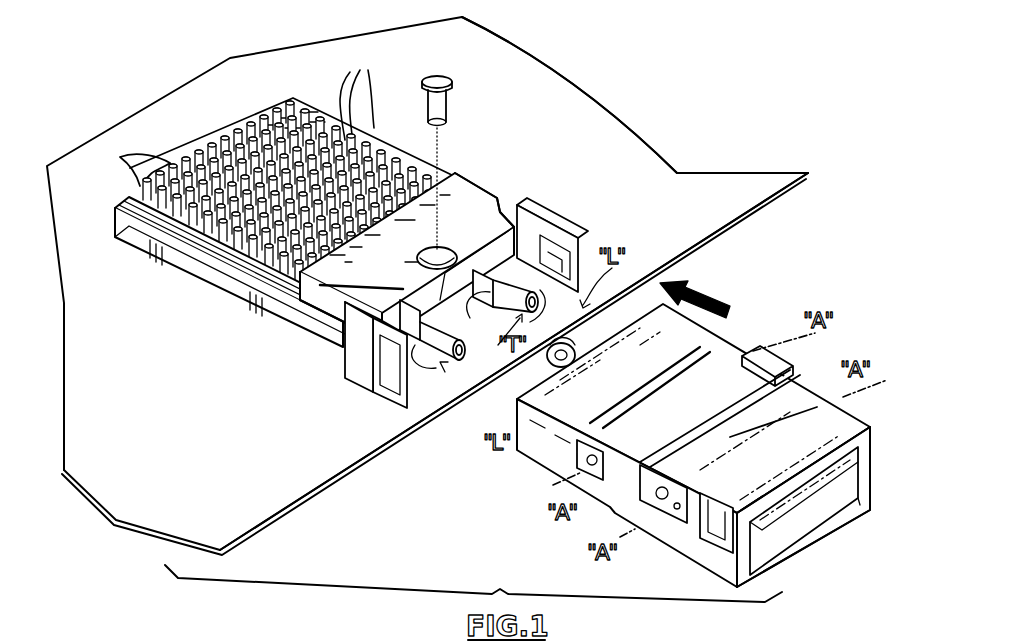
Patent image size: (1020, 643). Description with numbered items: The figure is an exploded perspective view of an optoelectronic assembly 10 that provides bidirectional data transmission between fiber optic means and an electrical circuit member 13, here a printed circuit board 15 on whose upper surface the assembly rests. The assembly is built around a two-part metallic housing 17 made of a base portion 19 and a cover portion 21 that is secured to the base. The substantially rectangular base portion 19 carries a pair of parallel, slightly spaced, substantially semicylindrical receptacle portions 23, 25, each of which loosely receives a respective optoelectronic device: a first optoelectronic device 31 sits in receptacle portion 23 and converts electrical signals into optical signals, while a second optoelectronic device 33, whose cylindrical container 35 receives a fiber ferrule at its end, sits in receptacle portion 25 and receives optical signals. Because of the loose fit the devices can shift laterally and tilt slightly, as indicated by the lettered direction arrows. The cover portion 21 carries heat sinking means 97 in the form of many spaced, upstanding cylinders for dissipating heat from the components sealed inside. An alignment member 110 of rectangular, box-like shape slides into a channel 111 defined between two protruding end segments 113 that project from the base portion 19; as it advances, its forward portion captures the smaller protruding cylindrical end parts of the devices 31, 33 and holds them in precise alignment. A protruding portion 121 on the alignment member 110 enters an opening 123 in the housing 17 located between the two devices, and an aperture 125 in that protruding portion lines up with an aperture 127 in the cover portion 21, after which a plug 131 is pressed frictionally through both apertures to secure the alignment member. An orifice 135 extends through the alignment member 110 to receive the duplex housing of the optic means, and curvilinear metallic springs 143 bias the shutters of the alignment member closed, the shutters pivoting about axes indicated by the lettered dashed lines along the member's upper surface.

The optoelectronic assembly 10 is at (689, 96).
The electrical circuit member 13 is at (542, 88).
The printed circuit board 15 is at (214, 391).
The housing 17 is at (478, 185).
The base portion 19 is at (243, 298).
The cover portion 21 is at (262, 130).
The receptacle portion 23 is at (445, 372).
The receptacle portion 25 is at (448, 344).
The optoelectronic device 31 is at (397, 283).
The optoelectronic device 33 is at (482, 262).
The container 35 is at (548, 248).
The heat sinking means 97 is at (121, 158).
The alignment member 110 is at (758, 346).
The channel 111 is at (447, 432).
The protruding end segments 113 is at (532, 212).
The protruding portion 121 is at (603, 350).
The opening 123 is at (448, 290).
The aperture 125 is at (557, 343).
The aperture 127 is at (437, 250).
The plug 131 is at (448, 110).
The orifice 135 is at (793, 525).
The curvilinear metallic springs 143 is at (817, 402).